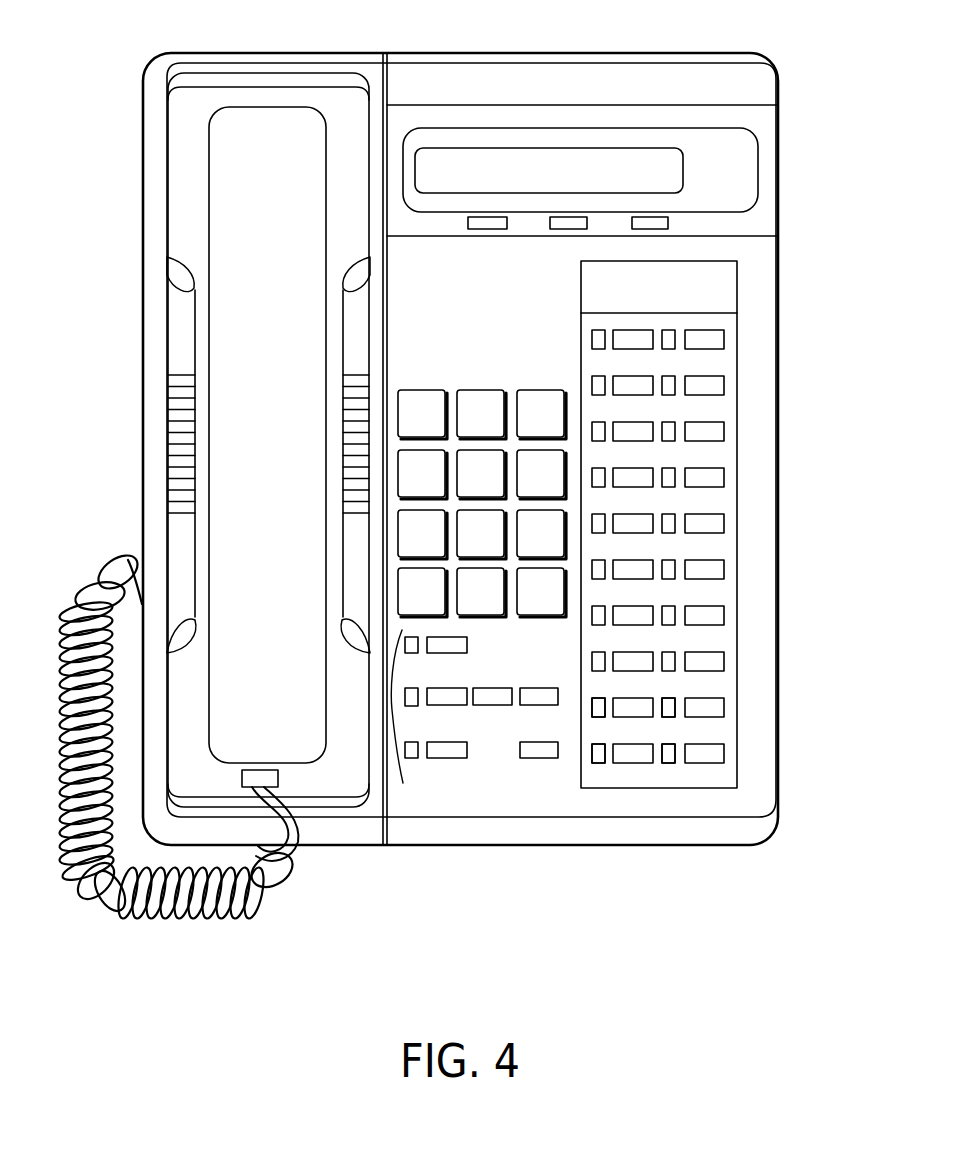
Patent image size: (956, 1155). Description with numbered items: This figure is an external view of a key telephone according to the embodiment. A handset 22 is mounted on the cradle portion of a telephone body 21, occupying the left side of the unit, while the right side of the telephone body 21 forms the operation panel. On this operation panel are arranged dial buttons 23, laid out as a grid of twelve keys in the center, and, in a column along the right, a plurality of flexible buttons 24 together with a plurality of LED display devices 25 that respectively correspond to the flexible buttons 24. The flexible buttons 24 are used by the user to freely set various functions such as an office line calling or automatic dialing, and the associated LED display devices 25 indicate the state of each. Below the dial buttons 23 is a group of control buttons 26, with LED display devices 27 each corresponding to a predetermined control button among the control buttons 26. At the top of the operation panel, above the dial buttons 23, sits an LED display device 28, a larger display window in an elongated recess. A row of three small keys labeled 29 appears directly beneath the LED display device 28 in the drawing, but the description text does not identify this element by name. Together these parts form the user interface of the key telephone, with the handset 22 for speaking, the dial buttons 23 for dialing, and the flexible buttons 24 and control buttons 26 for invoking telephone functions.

The telephone body 21 is at (488, 817).
The handset 22 is at (217, 215).
The dial buttons 23 is at (403, 376).
The flexible buttons 24 is at (788, 318).
The LED display devices 25 is at (598, 717).
The control buttons 26 is at (562, 767).
The LED display devices 27 is at (392, 710).
The LED display device 28 is at (545, 158).
The soft keys 29 is at (668, 243).